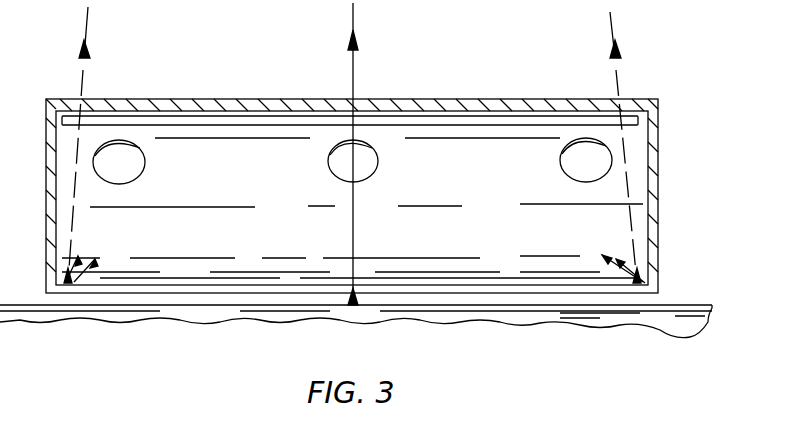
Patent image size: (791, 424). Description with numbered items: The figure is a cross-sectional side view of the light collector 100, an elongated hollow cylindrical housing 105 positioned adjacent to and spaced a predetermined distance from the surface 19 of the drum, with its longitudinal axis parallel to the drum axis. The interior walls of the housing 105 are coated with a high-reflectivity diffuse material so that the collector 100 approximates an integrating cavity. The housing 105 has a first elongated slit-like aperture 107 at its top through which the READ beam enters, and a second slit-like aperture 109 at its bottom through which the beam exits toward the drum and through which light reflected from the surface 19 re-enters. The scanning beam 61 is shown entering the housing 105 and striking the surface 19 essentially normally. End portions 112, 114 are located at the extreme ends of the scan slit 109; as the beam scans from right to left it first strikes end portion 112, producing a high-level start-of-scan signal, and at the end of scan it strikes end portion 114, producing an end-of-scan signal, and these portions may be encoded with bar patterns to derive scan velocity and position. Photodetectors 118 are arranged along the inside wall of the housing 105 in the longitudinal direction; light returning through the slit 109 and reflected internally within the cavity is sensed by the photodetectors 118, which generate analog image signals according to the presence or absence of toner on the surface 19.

The housing 105 is at (658, 186).
The first slit-like aperture 107 is at (232, 122).
The photodetectors 118 is at (145, 165).
The beam 61 is at (90, 45).
The collector 100 is at (547, 84).
The end portion 114 is at (84, 285).
The end portion 112 is at (650, 286).
The second slit-like aperture 109 is at (166, 307).
The surface 19 is at (662, 318).